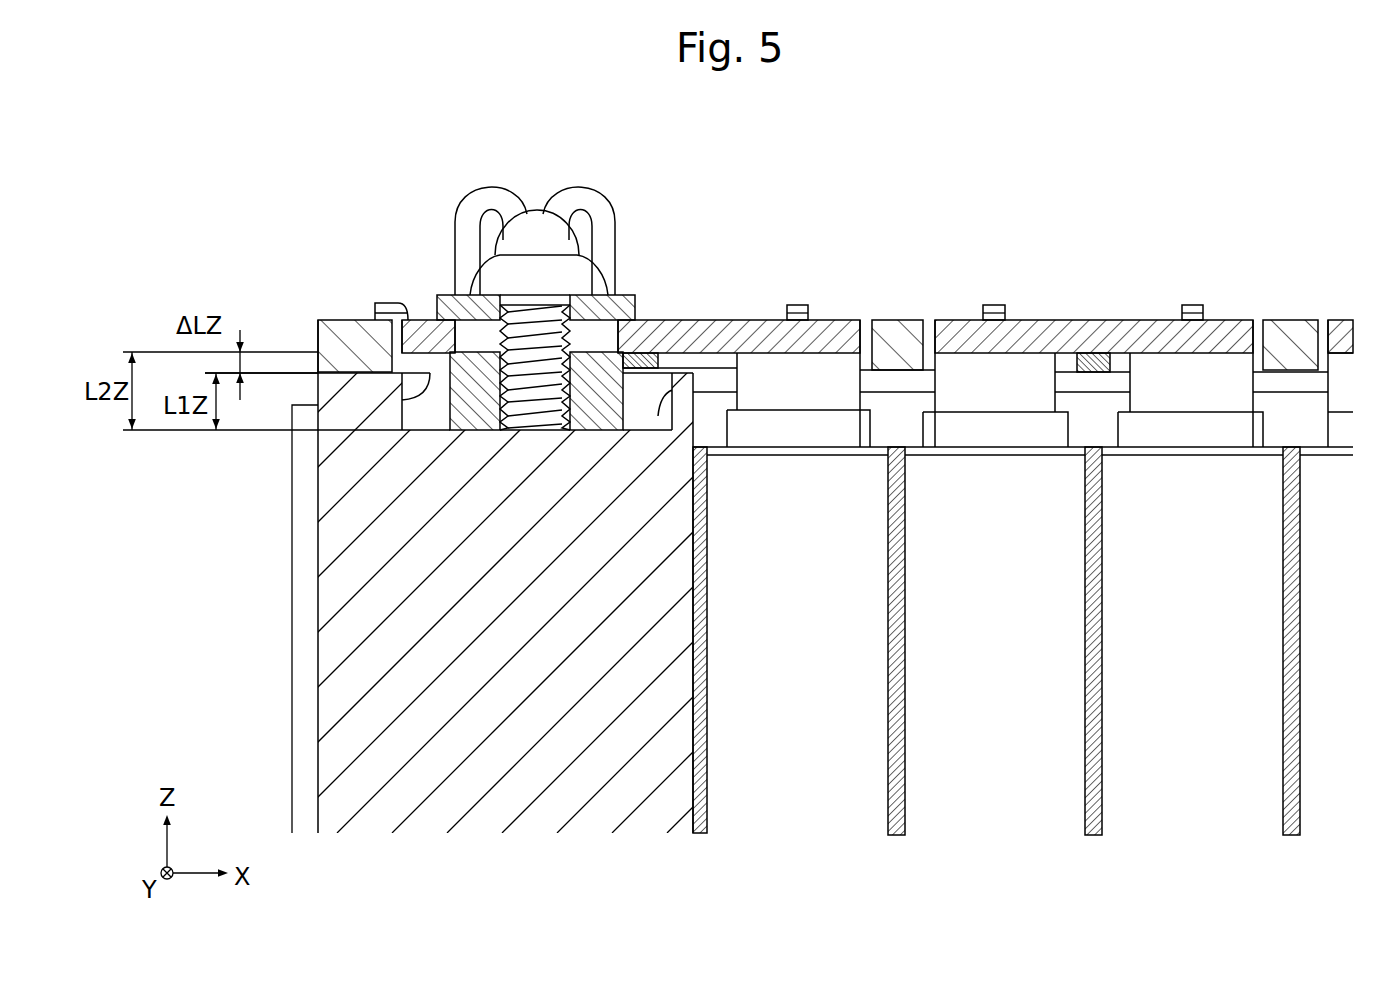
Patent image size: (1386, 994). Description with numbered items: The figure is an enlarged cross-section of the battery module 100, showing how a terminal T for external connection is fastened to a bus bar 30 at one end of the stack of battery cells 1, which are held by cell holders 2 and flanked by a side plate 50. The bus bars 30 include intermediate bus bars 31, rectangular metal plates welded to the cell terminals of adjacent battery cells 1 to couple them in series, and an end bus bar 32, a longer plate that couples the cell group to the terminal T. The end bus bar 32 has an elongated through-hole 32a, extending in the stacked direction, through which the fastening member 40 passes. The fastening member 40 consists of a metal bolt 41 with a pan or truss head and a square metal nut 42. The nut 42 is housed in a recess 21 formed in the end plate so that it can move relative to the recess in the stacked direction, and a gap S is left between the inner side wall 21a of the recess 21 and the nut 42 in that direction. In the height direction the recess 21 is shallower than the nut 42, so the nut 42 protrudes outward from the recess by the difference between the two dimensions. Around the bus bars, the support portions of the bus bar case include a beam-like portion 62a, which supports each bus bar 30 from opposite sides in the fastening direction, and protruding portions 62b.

The battery module 100 is at (294, 170).
The battery cell 1 is at (790, 778).
The cell holder 2 is at (888, 782).
The recess 21 is at (533, 434).
The inner side wall 21a is at (430, 372).
The bus bar 30 is at (738, 348).
The intermediate bus bar 31 is at (1083, 336).
The end bus bar 32 is at (832, 336).
The elongated through-hole 32a is at (610, 318).
The fastening member 40 is at (578, 279).
The bolt 41 is at (553, 266).
The nut 42 is at (478, 262).
The side plate 50 is at (300, 410).
The beam-like portion 62a is at (660, 356).
The protruding portion 62b is at (386, 304).
The gap S is at (424, 420).
The terminal for external connection T is at (450, 292).